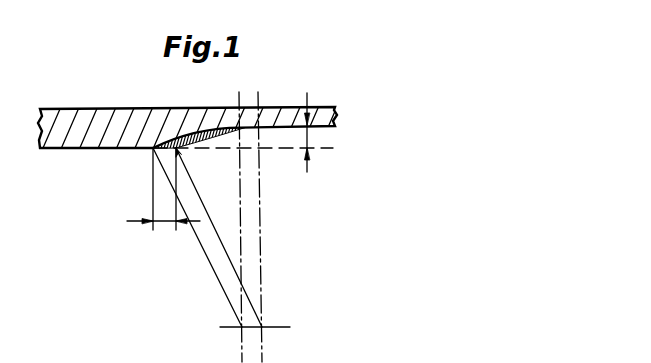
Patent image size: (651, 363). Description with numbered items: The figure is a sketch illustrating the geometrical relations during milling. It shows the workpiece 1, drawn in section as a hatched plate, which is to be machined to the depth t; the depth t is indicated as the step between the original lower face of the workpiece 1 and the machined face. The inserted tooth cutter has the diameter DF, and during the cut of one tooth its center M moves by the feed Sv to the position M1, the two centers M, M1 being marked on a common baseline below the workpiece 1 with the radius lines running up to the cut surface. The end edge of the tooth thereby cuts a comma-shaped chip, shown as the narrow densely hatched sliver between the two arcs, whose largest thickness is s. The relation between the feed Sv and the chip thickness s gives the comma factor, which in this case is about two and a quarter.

The workpiece 1 is at (82, 120).
The largest chip thickness s is at (162, 117).
The depth of cut t is at (316, 132).
The feed Sv is at (163, 189).
The cutter diameter DF is at (219, 237).
The cutter center M is at (269, 227).
The displaced cutter center M1 is at (221, 227).